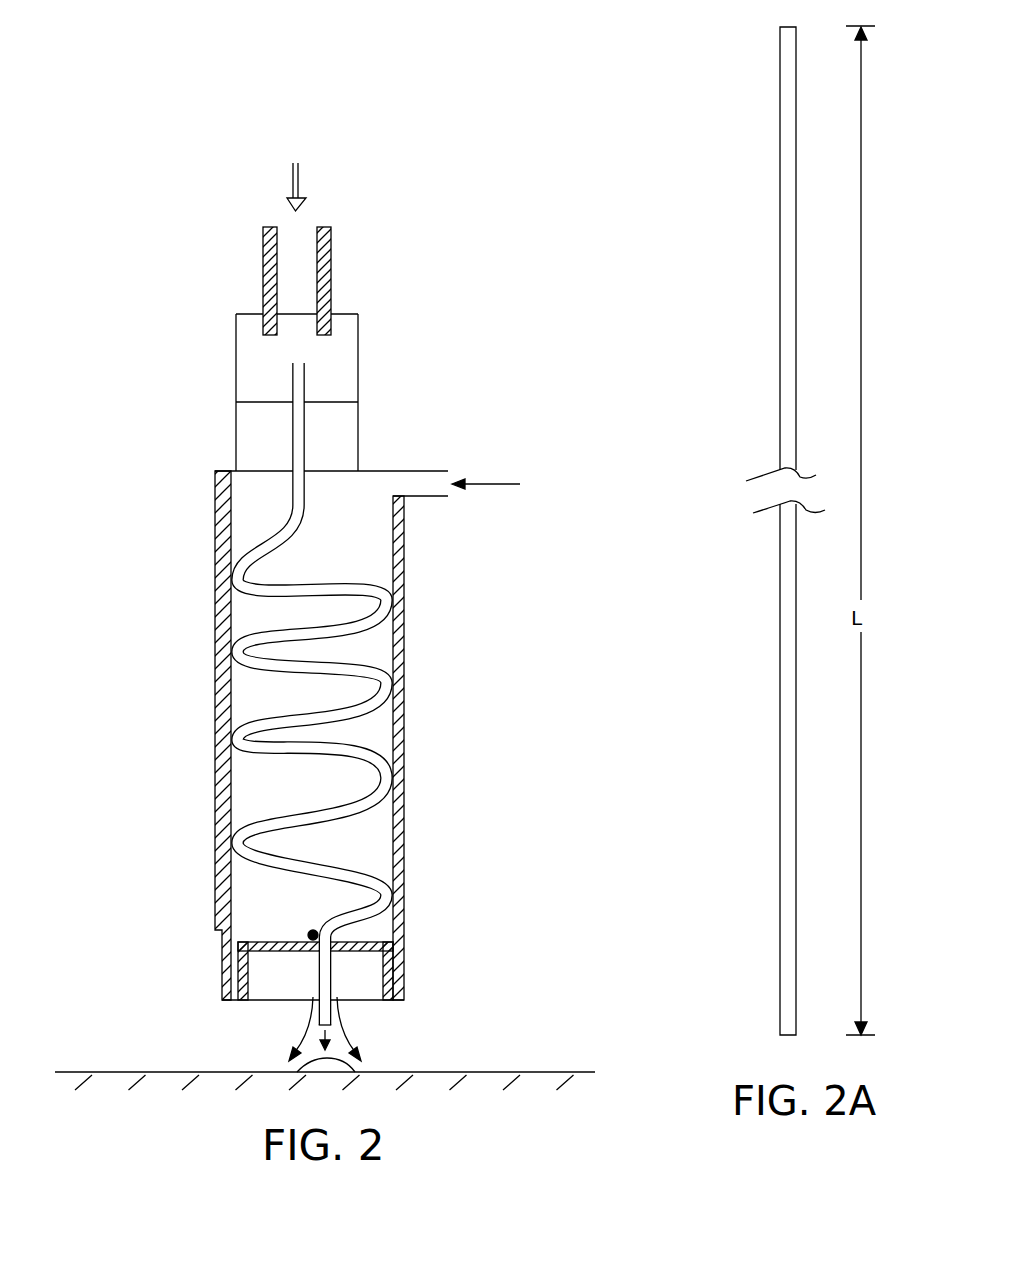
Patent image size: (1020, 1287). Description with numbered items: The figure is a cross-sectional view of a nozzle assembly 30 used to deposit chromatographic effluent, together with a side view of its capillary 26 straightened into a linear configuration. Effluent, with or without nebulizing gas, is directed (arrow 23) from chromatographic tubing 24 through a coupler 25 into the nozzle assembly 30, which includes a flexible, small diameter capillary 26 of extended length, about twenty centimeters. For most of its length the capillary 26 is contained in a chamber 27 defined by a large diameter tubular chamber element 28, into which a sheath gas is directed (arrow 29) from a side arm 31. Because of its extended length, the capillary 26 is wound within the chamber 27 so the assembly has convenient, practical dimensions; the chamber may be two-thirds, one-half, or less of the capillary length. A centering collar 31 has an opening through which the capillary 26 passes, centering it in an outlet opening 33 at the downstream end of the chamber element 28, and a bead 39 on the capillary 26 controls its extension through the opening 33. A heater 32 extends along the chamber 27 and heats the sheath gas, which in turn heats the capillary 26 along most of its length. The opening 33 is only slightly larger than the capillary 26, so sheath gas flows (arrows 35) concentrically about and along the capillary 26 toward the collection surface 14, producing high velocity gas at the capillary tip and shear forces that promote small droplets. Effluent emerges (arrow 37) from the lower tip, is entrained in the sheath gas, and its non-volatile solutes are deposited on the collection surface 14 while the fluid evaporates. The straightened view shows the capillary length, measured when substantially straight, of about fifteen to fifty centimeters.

In FIG. 2, the collection surface 14 is at (105, 1068).
In FIG. 2, the effluent direction arrow 23 is at (300, 178).
In FIG. 2, the chromatographic tubing 24 is at (332, 258).
In FIG. 2, the coupler 25 is at (358, 357).
In FIG. 2, the capillary 26 is at (305, 430).
In FIG. 2A, the capillary 26 is at (780, 722).
In FIG. 2, the chamber 27 is at (347, 547).
In FIG. 2, the tubular chamber element 28 is at (404, 643).
In FIG. 2, the sheath gas direction arrow 29 is at (500, 484).
In FIG. 2, the nozzle assembly 30 is at (417, 471).
In FIG. 2, the centering collar 31 is at (257, 939).
In FIG. 2, the heater 32 is at (214, 793).
In FIG. 2, the outlet opening 33 is at (313, 991).
In FIG. 2, the sheath gas flow arrows 35 is at (303, 1027).
In FIG. 2, the emerging effluent arrow 37 is at (355, 1065).
In FIG. 2, the bead 39 is at (310, 933).